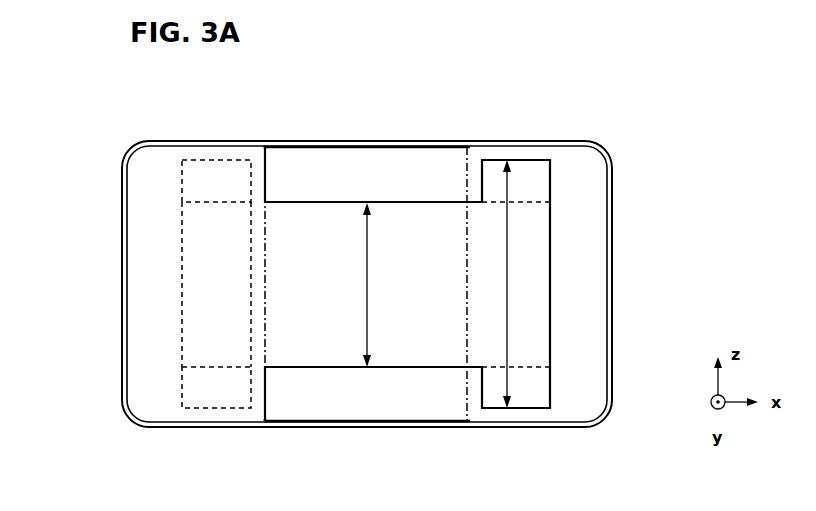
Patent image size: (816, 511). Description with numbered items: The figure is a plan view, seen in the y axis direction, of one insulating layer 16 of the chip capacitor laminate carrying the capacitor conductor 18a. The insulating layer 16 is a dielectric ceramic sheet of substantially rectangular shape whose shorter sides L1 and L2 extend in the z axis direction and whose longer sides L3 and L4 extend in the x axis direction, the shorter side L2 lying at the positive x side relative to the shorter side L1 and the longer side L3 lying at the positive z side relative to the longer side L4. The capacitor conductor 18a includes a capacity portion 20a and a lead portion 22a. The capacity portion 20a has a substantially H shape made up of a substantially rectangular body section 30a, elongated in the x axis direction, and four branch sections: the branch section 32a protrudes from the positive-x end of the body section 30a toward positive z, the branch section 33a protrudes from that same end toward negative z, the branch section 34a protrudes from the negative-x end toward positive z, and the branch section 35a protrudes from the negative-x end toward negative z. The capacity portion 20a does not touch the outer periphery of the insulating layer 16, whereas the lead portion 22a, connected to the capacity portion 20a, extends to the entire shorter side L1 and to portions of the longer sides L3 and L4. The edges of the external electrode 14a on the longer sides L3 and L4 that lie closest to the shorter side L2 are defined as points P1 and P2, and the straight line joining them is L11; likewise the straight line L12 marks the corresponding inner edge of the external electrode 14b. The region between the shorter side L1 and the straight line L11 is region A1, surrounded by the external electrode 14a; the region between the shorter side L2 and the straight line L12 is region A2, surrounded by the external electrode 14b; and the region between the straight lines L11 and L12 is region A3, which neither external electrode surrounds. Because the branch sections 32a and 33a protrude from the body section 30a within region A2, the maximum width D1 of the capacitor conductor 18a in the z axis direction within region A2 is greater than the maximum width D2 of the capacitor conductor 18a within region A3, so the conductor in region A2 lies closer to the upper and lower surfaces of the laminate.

The insulating layer 16 is at (592, 257).
The external electrode 14a is at (120, 299).
The external electrode 14b is at (613, 303).
The capacitor conductor 18a is at (394, 186).
The capacity portion 20a is at (430, 392).
The lead portion 22a is at (150, 407).
The body section 30a is at (407, 352).
The branch section 32a is at (528, 170).
The branch section 33a is at (532, 392).
The branch section 34a is at (218, 185).
The branch section 35a is at (220, 390).
The region A1 is at (163, 178).
The region A2 is at (582, 168).
The region A3 is at (432, 170).
The shorter side L1 is at (123, 373).
The shorter side L2 is at (607, 225).
The longer side L3 is at (355, 146).
The longer side L4 is at (343, 422).
The straight line L11 is at (267, 302).
The straight line L12 is at (467, 305).
The point P1 is at (265, 147).
The point P2 is at (265, 418).
The width D1 is at (525, 284).
The width D2 is at (386, 285).